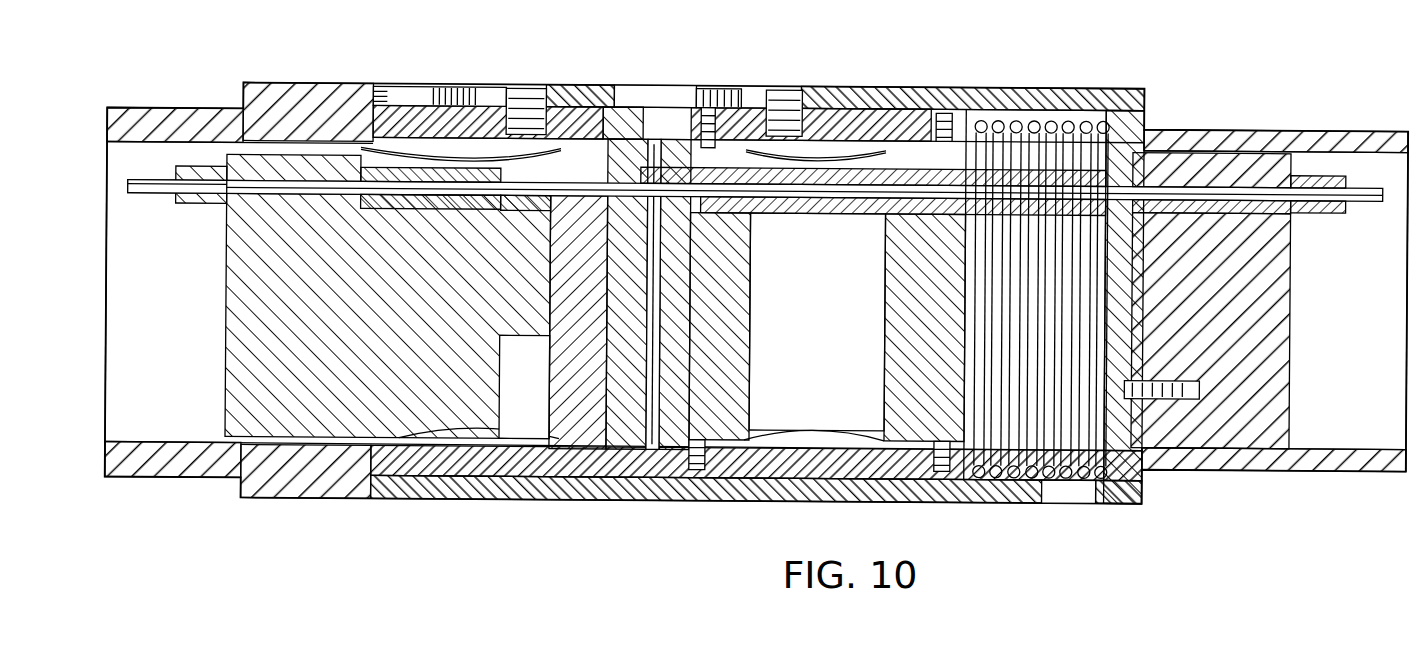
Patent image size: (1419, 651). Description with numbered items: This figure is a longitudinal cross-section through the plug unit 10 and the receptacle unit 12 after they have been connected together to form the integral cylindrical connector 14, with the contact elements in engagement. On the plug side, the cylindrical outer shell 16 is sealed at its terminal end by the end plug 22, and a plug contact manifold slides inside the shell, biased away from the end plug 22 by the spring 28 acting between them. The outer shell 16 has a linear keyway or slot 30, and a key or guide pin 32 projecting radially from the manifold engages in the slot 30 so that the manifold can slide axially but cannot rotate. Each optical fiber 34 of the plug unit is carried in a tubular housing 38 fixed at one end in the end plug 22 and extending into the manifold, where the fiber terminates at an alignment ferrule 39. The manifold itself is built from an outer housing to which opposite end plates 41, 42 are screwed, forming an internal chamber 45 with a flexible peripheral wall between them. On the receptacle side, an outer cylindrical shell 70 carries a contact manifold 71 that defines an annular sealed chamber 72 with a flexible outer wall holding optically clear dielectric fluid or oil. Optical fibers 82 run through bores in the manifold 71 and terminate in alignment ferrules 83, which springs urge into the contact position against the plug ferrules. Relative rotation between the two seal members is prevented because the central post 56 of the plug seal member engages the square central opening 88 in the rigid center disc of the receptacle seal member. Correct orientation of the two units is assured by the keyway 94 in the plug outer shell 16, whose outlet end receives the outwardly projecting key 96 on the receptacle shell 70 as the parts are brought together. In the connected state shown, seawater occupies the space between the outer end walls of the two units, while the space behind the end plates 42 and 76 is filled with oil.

The plug unit 10 is at (1120, 84).
The receptacle unit 12 is at (271, 84).
The integral cylindrical connector 14 is at (582, 80).
The outer shell 16 is at (925, 99).
The end plug 22 is at (1280, 344).
The spring 28 is at (1010, 123).
The keyway or slot 30 is at (704, 100).
The key or guide pin 32 is at (790, 100).
The optical fibers 34 is at (1350, 199).
The tubular housing 38 is at (758, 215).
The alignment ferrule 39 is at (612, 129).
The end plate 41 is at (888, 261).
The end plate 42 is at (735, 313).
The internal chamber 45 is at (800, 350).
The post 56 is at (612, 314).
The outer cylindrical shell 70 is at (325, 494).
The contact manifold 71 is at (230, 324).
The annular sealed chamber 72 is at (530, 378).
The end plate 76 is at (555, 381).
The optical fibers 82 is at (150, 196).
The alignment ferrules 83 is at (540, 214).
The central opening 88 is at (612, 266).
The keyway 94 is at (430, 100).
The key 96 is at (525, 96).